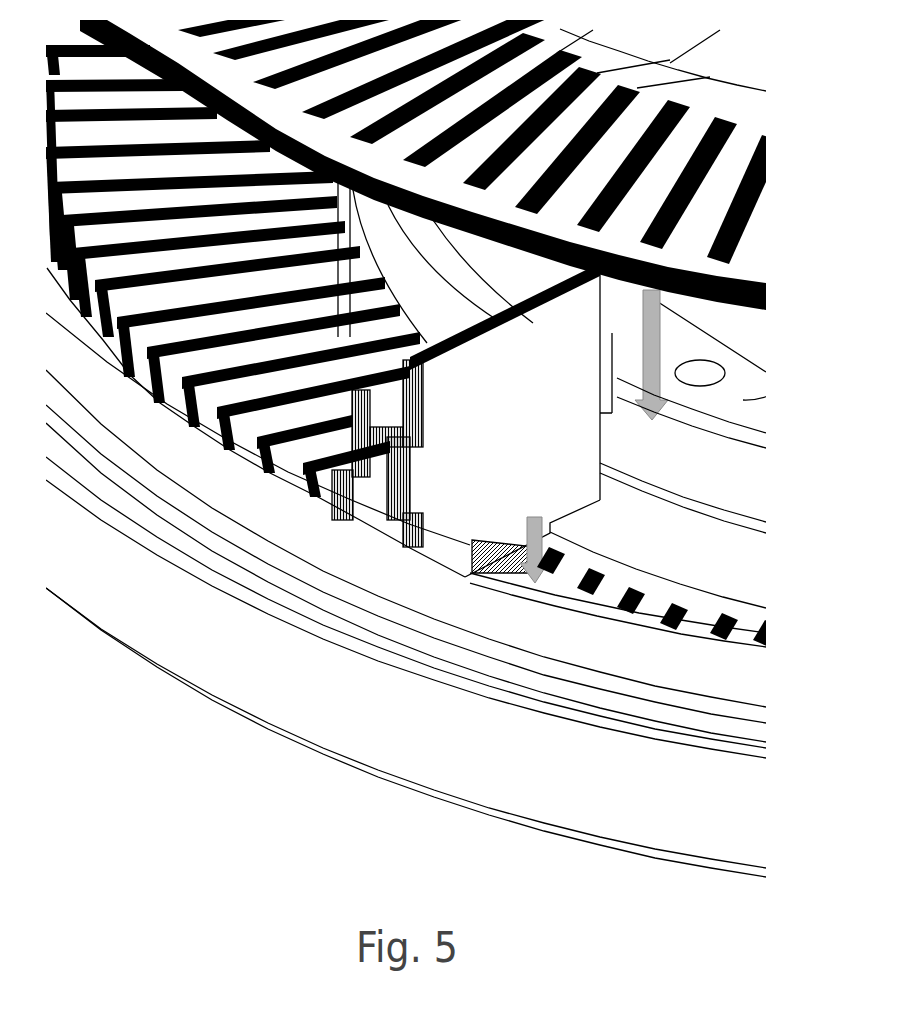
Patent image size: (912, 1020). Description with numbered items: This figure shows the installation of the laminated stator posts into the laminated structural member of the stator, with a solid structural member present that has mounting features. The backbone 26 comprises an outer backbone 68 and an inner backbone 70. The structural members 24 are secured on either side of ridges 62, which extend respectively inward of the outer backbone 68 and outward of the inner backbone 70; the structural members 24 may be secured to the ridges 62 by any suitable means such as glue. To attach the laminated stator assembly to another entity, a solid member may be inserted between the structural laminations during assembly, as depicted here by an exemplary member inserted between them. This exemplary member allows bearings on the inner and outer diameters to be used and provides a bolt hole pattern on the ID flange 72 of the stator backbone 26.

The structural member 24 is at (730, 208).
The backbone 26 is at (447, 440).
The ridge 62 is at (718, 557).
The outer backbone 68 is at (333, 707).
The inner backbone 70 is at (474, 157).
The ID flange 72 is at (474, 157).